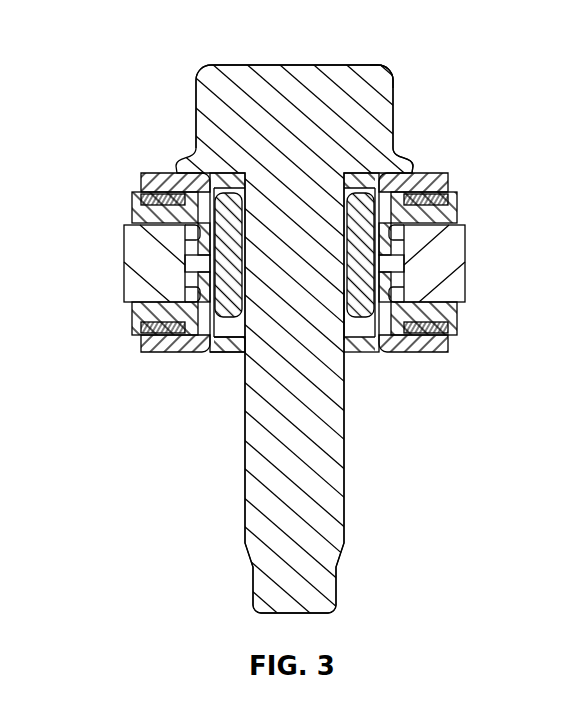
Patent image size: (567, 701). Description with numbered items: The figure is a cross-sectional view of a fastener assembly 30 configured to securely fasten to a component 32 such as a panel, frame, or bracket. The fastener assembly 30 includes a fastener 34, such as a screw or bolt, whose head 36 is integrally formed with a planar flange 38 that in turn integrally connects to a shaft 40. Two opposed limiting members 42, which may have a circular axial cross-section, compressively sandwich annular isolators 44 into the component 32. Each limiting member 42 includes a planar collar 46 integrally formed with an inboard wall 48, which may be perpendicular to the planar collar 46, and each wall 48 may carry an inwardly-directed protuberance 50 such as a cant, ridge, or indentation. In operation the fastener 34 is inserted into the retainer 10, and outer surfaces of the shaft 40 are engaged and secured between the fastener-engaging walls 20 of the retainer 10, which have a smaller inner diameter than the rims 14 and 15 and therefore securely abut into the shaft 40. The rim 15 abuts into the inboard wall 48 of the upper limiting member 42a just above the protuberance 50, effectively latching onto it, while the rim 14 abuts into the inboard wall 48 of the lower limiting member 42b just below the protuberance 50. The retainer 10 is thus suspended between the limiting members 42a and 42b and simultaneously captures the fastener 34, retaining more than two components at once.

The fastener assembly 30 is at (126, 44).
The retainer 10 is at (362, 205).
The rim 14 is at (357, 318).
The rim 15 is at (227, 200).
The fastener-engaging walls 20 is at (124, 271).
The component 32 is at (122, 283).
The fastener 34 is at (400, 105).
The head 36 is at (390, 74).
The planar flange 38 is at (405, 157).
The shaft 40 is at (267, 405).
The limiting member 42 is at (451, 184).
The limiting member 42a is at (138, 183).
The limiting member 42b is at (142, 353).
The annular isolators 44 is at (130, 213).
The planar collar 46 is at (143, 173).
The inboard wall 48 is at (140, 200).
The protuberance 50 is at (172, 233).